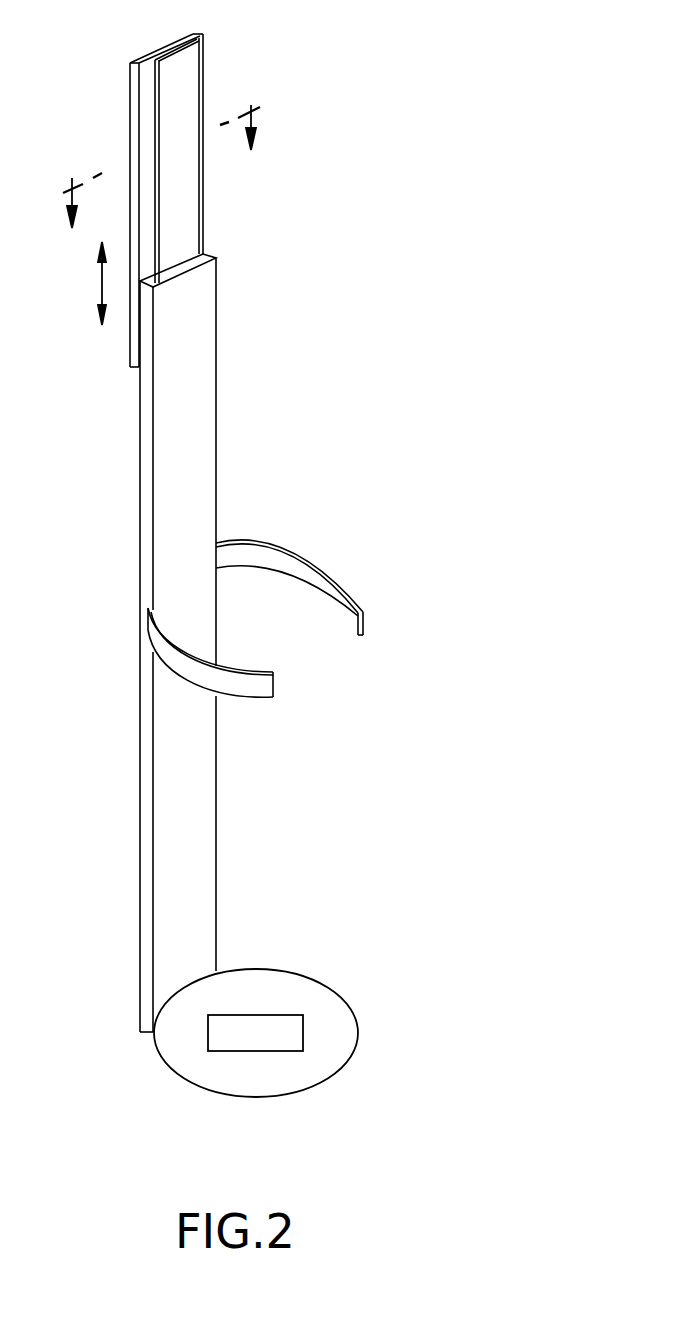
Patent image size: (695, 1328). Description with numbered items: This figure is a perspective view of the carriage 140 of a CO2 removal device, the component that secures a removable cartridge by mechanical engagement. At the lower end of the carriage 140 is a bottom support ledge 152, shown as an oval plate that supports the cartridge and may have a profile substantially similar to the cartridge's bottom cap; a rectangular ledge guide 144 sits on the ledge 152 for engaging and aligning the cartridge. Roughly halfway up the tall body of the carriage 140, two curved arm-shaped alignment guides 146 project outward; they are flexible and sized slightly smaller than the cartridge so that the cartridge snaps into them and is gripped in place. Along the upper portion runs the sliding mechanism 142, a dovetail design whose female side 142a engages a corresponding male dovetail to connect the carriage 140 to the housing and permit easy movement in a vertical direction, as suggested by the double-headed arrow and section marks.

The carriage 140 is at (73, 38).
The sliding mechanism 142 is at (224, 243).
The sliding mechanism 142a is at (188, 77).
The alignment guides 146 is at (325, 567).
The ledge guide 144 is at (306, 1026).
The bottom support ledge 152 is at (371, 1063).